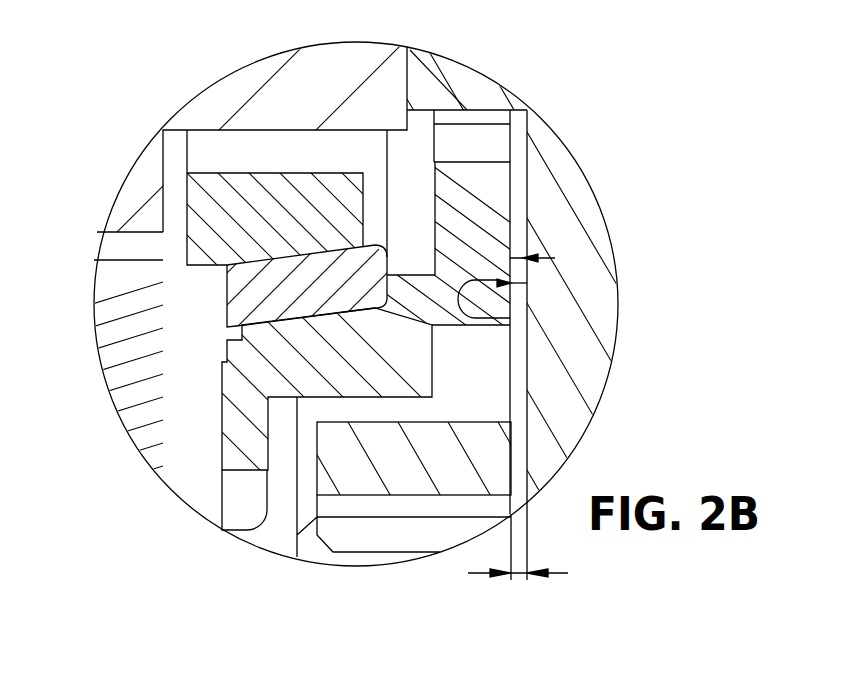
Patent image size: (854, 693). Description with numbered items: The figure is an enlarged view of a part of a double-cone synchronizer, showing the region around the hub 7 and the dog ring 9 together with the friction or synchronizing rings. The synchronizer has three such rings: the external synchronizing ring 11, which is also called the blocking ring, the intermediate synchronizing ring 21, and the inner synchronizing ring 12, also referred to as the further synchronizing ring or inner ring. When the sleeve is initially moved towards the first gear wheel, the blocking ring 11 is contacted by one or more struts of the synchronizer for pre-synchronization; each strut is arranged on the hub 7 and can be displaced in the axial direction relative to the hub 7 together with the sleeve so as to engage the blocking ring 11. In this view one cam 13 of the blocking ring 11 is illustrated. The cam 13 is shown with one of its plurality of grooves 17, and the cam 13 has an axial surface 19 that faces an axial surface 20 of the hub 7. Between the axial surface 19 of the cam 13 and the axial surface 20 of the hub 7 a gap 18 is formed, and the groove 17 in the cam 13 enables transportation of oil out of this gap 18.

The hub 7 is at (560, 225).
The dog ring 9 is at (133, 322).
The external synchronizing ring 11 is at (243, 413).
The inner synchronizing ring 12 is at (275, 208).
The cam 13 is at (473, 208).
The groove 17 is at (473, 143).
The gap 18 is at (521, 582).
The axial surface of the cam 19 is at (555, 258).
The axial surface of the hub 20 is at (500, 310).
The intermediate synchronizing ring 21 is at (290, 289).